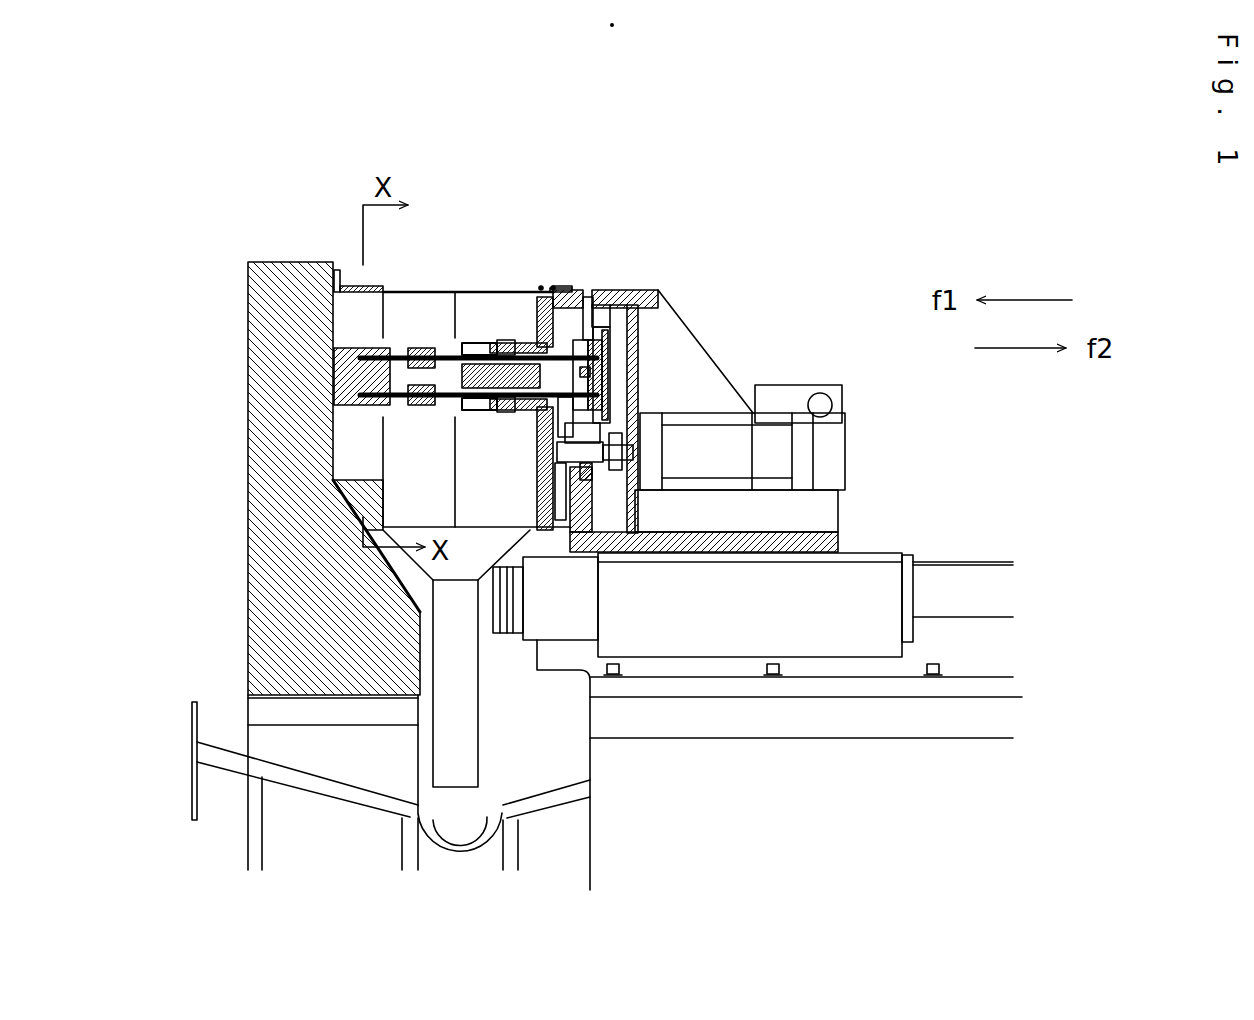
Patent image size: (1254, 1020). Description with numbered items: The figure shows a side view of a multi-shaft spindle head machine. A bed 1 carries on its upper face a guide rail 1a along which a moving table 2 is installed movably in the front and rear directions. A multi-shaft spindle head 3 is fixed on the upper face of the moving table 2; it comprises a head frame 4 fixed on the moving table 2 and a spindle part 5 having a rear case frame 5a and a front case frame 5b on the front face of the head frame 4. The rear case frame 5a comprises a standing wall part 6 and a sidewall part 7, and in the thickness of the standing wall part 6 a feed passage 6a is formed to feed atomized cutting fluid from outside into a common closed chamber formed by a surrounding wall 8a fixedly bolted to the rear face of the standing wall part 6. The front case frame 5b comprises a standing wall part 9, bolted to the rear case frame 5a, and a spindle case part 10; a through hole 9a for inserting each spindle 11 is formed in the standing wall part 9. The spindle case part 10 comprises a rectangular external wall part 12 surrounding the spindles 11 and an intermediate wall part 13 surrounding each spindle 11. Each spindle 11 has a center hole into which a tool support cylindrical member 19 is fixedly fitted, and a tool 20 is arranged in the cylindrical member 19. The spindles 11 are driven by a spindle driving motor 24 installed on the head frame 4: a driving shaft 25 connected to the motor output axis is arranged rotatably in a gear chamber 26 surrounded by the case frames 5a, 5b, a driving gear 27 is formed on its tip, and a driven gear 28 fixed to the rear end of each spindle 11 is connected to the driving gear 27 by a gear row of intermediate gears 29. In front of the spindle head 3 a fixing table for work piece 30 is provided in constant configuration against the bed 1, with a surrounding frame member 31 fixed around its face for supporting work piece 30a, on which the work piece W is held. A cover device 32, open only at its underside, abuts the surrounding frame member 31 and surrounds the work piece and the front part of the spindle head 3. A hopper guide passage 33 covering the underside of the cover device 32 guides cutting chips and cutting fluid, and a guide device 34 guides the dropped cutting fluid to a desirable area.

The bed 1 is at (850, 800).
The guide rail 1a is at (973, 628).
The moving table 2 is at (880, 567).
The multi-shaft spindle head 3 is at (767, 325).
The head frame 4 is at (833, 510).
The spindle part 5 is at (520, 188).
The rear case frame 5a is at (572, 278).
The front case frame 5b is at (523, 305).
The standing wall part 6 is at (603, 535).
The feed passage 6a is at (593, 297).
The sidewall part 7 is at (560, 457).
The surrounding wall 8a is at (607, 342).
The standing wall part 9 is at (517, 533).
The through hole 9a is at (522, 337).
The spindle case part 10 is at (515, 473).
The spindle 11 is at (527, 350).
The rectangular external wall part 12 is at (480, 417).
The intermediate wall part 13 is at (510, 417).
The tool support cylindrical member 19 is at (425, 350).
The tool 20 is at (360, 357).
The spindle driving motor 24 is at (712, 467).
The driving shaft 25 is at (592, 453).
The gear chamber 26 is at (617, 317).
The driving gear 27 is at (593, 467).
The driven gear 28 is at (607, 388).
The intermediate gear 29 is at (603, 417).
The fixing table for work piece 30 is at (270, 373).
The face for supporting work piece 30a is at (340, 452).
The surrounding frame member 31 is at (352, 287).
The cover device 32 is at (440, 287).
The hopper guide passage 33 is at (413, 563).
The guide device 34 is at (455, 855).
The workpiece W is at (312, 297).